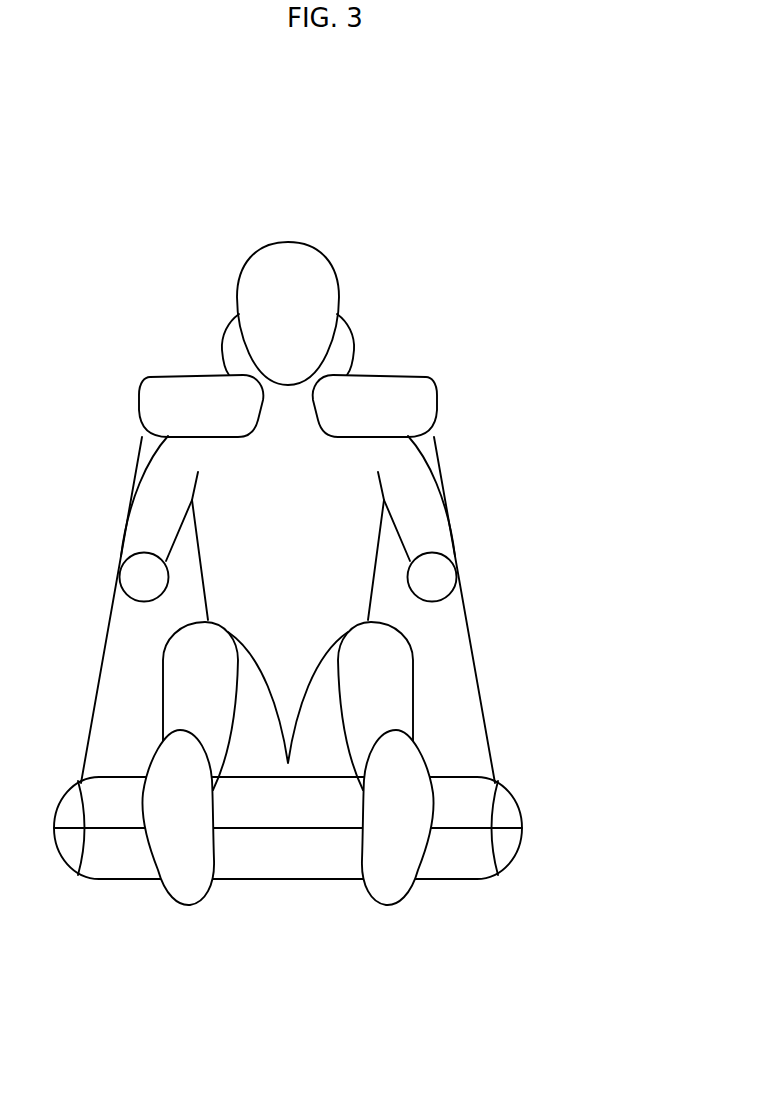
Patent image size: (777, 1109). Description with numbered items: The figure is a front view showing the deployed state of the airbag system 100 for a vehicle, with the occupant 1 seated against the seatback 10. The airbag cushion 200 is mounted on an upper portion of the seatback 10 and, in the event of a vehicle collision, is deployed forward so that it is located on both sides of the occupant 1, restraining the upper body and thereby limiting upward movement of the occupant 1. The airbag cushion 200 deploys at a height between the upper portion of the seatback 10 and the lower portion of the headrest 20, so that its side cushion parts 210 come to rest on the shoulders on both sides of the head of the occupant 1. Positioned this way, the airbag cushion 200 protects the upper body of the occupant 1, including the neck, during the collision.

The airbag system 100 is at (87, 166).
The occupant 1 is at (298, 576).
The seatback 10 is at (455, 510).
The headrest 20 is at (342, 347).
The airbag cushion 200 is at (358, 307).
The side cushion parts 210 is at (188, 385).